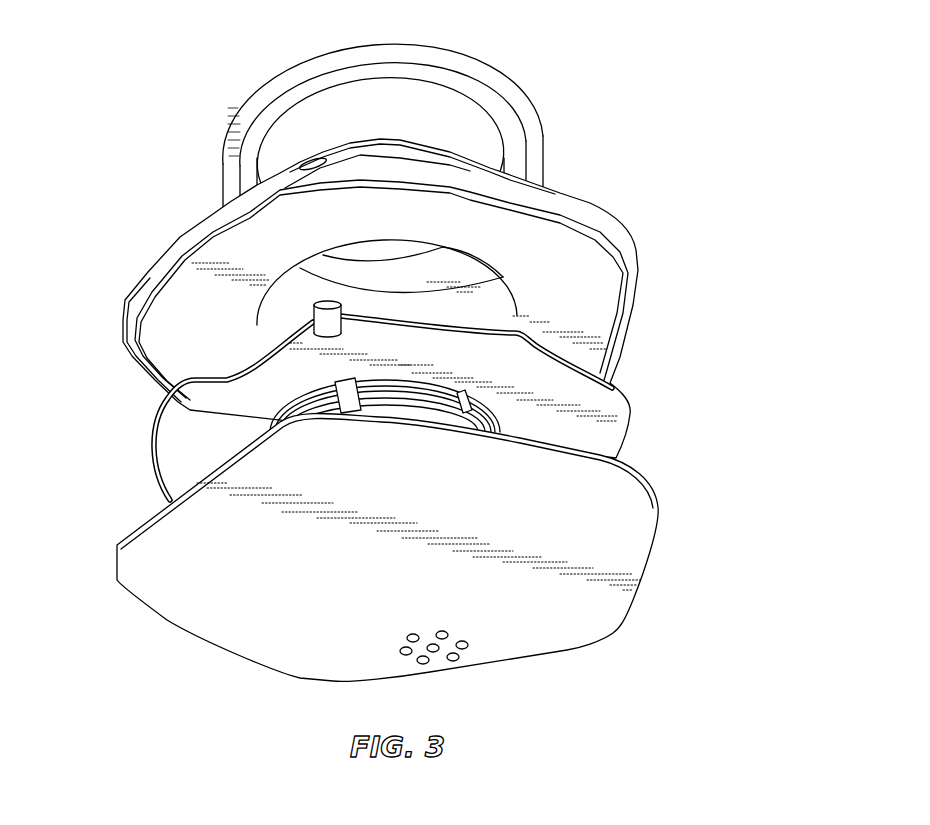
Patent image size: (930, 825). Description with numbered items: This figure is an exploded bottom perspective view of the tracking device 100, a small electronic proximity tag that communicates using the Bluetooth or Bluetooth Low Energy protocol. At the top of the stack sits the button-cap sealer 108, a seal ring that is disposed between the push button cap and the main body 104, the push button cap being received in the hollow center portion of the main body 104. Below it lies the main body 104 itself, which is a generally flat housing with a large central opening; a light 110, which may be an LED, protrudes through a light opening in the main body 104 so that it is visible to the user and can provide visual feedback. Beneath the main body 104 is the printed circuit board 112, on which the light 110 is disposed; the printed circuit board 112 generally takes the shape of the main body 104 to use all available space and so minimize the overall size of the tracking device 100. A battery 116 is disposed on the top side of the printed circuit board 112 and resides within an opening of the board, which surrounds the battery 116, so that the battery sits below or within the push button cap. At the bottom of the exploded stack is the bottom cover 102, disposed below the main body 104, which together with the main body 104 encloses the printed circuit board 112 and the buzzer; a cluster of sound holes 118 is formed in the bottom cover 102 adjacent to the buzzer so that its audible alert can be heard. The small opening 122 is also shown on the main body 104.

The tracking device 100 is at (676, 103).
The bottom cover 102 is at (627, 543).
The main body 104 is at (607, 285).
The button-cap sealer 108 is at (255, 98).
The light 110 is at (314, 313).
The printed circuit board 112 is at (192, 427).
The battery 116 is at (613, 385).
The sound holes 118 is at (436, 652).
The hole 122 is at (240, 186).